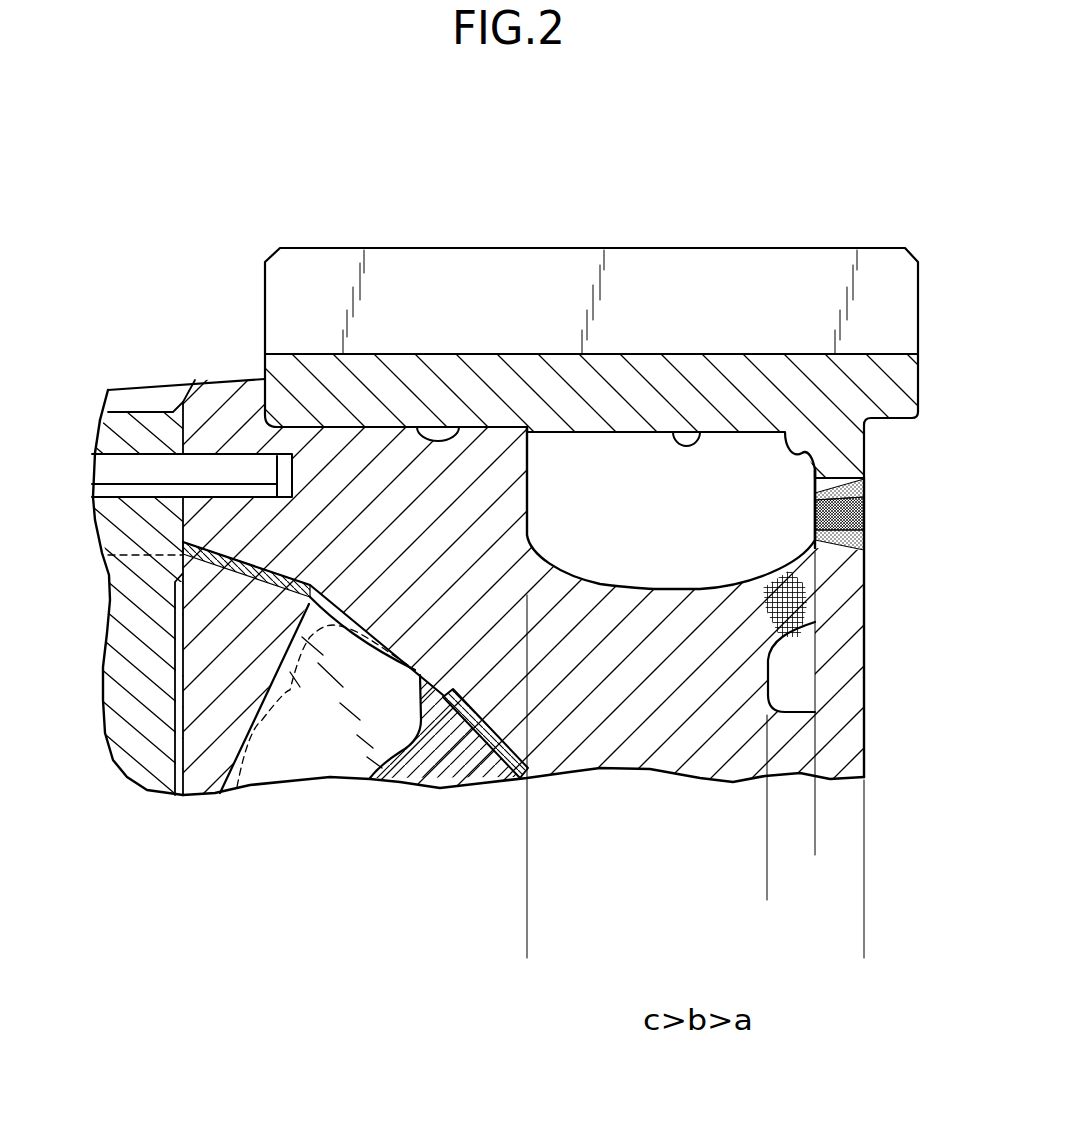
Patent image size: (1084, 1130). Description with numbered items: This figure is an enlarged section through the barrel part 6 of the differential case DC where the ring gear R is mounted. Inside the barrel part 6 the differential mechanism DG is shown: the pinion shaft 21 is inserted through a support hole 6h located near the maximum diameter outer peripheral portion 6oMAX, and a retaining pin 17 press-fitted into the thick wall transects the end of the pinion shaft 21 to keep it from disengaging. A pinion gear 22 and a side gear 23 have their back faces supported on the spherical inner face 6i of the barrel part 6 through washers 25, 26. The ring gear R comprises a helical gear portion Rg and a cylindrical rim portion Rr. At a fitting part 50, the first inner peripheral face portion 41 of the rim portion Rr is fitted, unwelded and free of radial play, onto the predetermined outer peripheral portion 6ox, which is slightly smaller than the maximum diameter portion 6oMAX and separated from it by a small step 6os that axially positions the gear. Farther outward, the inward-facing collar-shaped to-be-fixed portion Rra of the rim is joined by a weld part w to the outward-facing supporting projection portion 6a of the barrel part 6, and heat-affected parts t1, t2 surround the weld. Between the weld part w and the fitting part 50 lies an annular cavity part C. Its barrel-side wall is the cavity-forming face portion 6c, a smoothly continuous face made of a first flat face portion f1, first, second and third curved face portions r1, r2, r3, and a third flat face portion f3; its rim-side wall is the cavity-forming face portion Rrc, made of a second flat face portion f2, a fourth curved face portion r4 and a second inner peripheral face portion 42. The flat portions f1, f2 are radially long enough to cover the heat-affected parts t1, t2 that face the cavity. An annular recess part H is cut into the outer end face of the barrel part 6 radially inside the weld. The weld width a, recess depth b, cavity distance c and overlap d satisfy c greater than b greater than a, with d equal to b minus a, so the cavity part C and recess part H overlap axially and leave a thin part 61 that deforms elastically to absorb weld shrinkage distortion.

The barrel part 6 is at (453, 533).
The ring gear R is at (645, 162).
The gear portion Rg is at (532, 290).
The rim portion Rr is at (637, 358).
The cavity-forming face portion Rrc is at (813, 313).
The to-be-fixed portion Rra is at (866, 472).
The differential case DC is at (212, 377).
The maximum diameter outer peripheral portion 6oMAX is at (253, 383).
The support hole 6h is at (180, 440).
The retaining pin 17 is at (137, 478).
The step 6os is at (266, 397).
The fitting part 50 is at (490, 304).
The predetermined outer peripheral portion 6ox is at (378, 424).
The first inner peripheral face portion 41 is at (458, 424).
The second inner peripheral face portion 42 is at (702, 430).
The second flat face portion f2 is at (815, 492).
The fourth curved face portion r4 is at (788, 443).
The cavity part C is at (607, 478).
The cavity-forming face portion 6c is at (748, 501).
The third flat face portion f3 is at (528, 505).
The third curved face portion r3 is at (553, 562).
The second curved face portion r2 is at (683, 588).
The first curved face portion r1 is at (813, 545).
The first flat face portion f1 is at (813, 530).
The heat-affected part t2 is at (864, 490).
The weld part w is at (864, 508).
The heat-affected part t1 is at (864, 540).
The supporting projection portion 6a is at (866, 556).
The thin part 61 is at (797, 618).
The recess part H is at (803, 707).
The washer 25 is at (262, 570).
The washer 26 is at (487, 722).
The inner face 6i is at (343, 628).
The pinion shaft 21 is at (153, 767).
The pinion gear 22 is at (210, 767).
The side gear 23 is at (433, 787).
The differential mechanism DG is at (323, 897).
The axial width of the weld part a is at (864, 812).
The axial depth of the recess part b is at (864, 893).
The axial distance c is at (864, 950).
The amount of overlap d is at (815, 845).